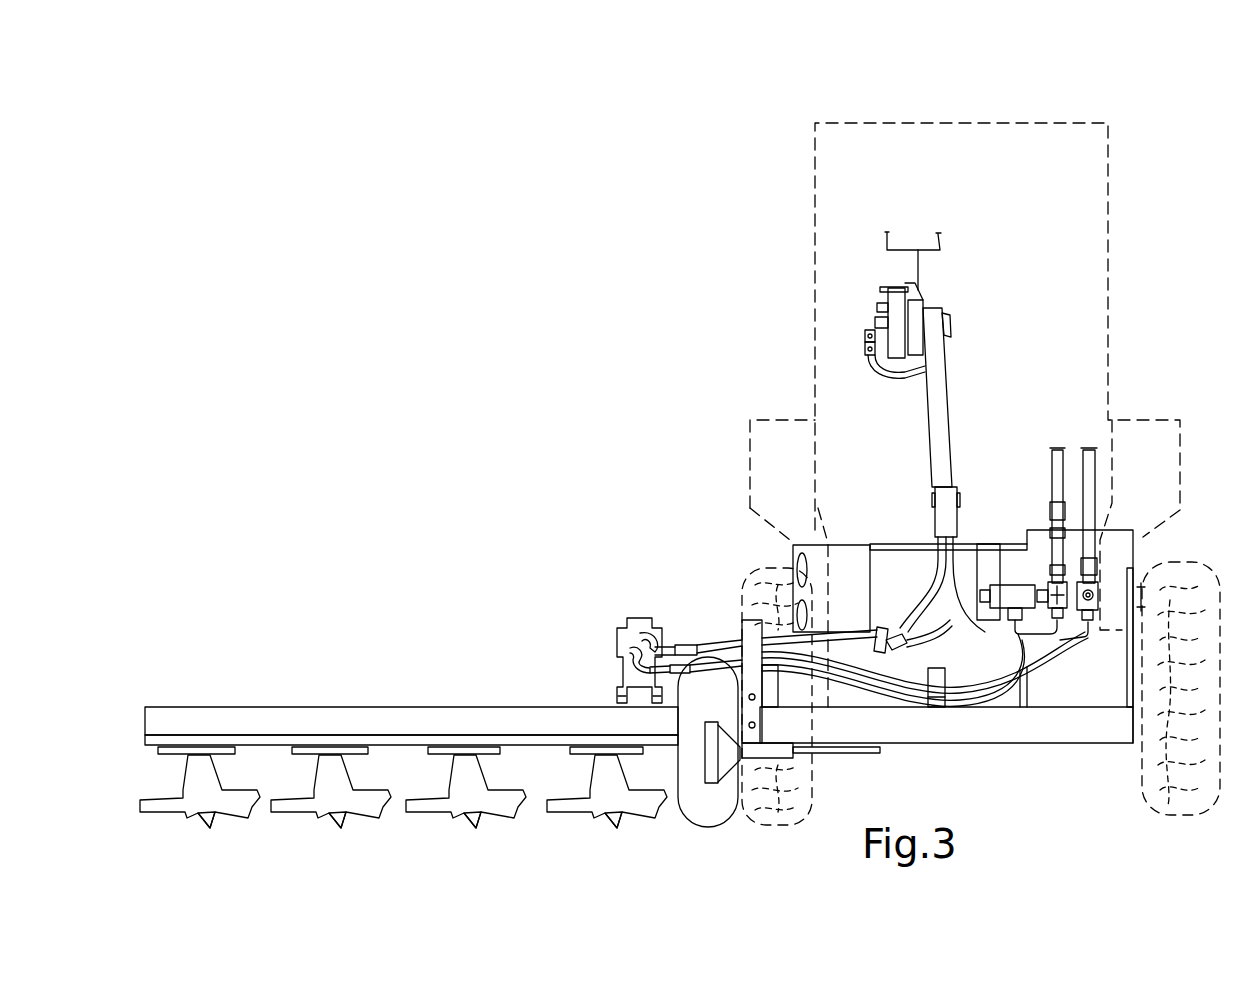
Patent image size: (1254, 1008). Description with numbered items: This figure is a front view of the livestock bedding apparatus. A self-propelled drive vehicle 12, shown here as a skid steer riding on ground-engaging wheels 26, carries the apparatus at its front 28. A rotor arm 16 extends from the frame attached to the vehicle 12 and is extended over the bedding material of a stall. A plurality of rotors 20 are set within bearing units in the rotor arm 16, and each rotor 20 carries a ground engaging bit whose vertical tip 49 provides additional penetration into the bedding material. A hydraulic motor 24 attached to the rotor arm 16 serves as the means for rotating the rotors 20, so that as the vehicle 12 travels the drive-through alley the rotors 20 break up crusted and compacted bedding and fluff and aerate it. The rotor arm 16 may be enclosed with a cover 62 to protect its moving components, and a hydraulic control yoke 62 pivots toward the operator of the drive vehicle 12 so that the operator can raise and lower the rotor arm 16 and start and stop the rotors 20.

The drive vehicle 12 is at (1013, 95).
The rotor arm 16 is at (307, 704).
The rotor 20 is at (165, 789).
The hydraulic motor 24 is at (640, 618).
The ground-engaging wheels 26 is at (1140, 797).
The front 28 is at (1040, 387).
The vertical tip 49 is at (210, 828).
The hydraulic control yoke 62 is at (935, 308).